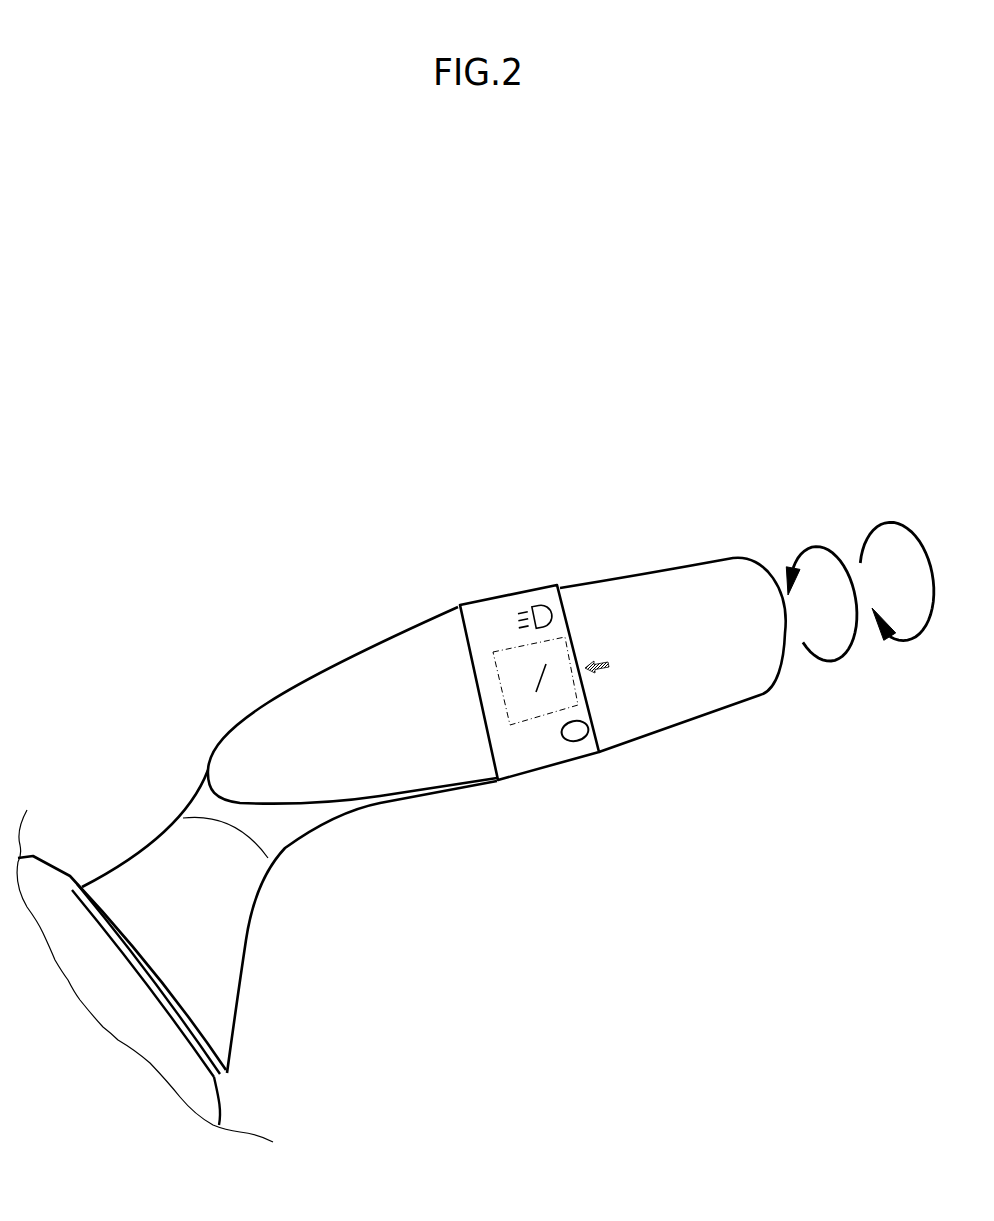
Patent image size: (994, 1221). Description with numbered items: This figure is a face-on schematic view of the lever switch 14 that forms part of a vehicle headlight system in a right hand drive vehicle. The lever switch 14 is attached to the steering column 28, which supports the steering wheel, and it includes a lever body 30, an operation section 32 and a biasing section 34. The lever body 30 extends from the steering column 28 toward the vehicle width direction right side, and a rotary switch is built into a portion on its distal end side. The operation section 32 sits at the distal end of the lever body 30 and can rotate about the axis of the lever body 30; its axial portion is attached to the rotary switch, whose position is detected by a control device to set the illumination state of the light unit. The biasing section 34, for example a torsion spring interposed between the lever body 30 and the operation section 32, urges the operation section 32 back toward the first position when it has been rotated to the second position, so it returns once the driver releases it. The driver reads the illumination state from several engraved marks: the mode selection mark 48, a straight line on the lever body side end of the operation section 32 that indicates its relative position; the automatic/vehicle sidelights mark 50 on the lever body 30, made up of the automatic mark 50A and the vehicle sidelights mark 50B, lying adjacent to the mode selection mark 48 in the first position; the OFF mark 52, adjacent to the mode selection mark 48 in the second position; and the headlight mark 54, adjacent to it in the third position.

The lever switch 14 is at (516, 474).
The steering column 28 is at (217, 1113).
The lever body 30 is at (227, 932).
The operation section 32 is at (597, 582).
The biasing section 34 is at (505, 643).
The mode selection mark 48 is at (612, 668).
The automatic/vehicle sidelights mark 50 is at (570, 653).
The automatic mark 50A is at (478, 687).
The vehicle sidelights mark 50B is at (582, 680).
The OFF mark 52 is at (578, 745).
The headlight mark 54 is at (559, 600).